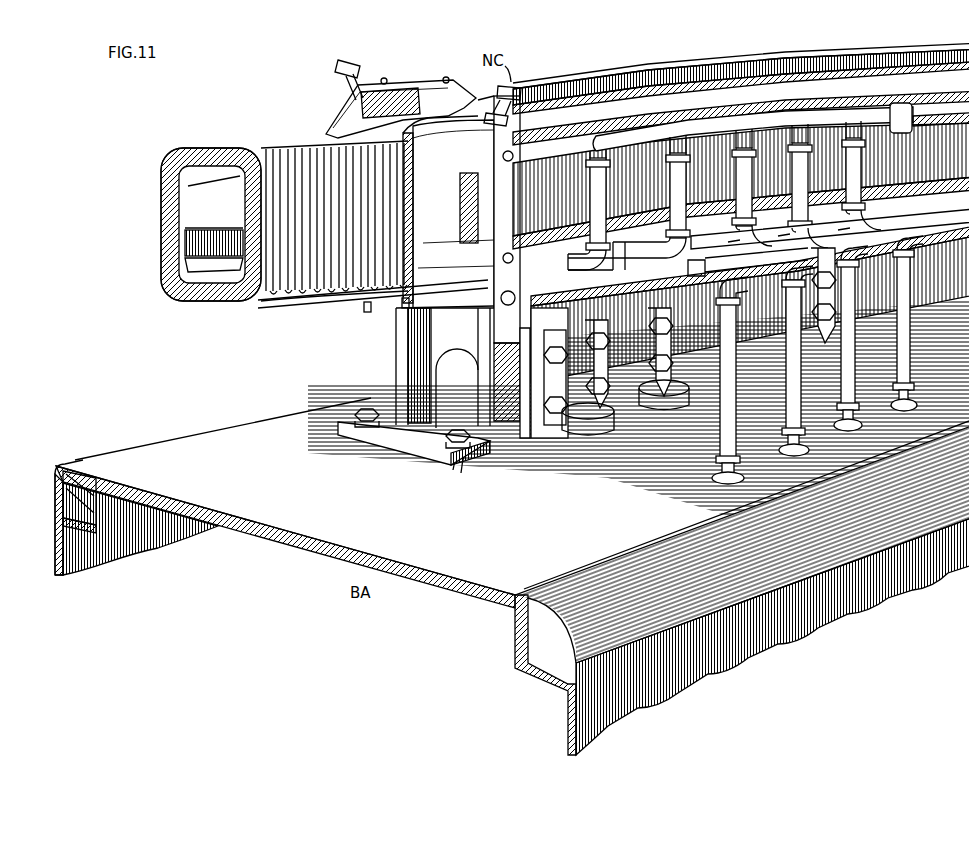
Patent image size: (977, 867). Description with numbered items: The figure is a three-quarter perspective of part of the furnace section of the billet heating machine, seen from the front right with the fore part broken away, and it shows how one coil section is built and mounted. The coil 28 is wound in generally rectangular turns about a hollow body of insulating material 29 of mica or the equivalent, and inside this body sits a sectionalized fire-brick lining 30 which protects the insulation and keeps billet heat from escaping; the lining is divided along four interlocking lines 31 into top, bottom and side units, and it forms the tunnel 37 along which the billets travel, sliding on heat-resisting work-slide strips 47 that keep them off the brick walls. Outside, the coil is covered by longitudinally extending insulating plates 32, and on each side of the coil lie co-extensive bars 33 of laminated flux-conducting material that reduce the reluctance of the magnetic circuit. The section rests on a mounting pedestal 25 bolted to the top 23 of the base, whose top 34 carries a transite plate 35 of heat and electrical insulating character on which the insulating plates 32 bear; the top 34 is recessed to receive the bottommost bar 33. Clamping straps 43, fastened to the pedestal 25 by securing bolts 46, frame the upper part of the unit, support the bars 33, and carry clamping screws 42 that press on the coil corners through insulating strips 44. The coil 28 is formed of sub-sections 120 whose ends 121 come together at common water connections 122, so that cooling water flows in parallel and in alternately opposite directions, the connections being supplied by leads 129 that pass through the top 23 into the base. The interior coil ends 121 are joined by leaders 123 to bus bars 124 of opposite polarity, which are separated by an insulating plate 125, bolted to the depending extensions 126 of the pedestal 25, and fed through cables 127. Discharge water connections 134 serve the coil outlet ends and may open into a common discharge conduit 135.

The top of the base 23 is at (430, 585).
The mounting pedestal 25 is at (392, 425).
The coil 28 is at (170, 142).
The hollow body of insulating material 29 is at (220, 150).
The sectionalized fire-brick lining 30 is at (180, 212).
The interlocking division lines 31 is at (185, 176).
The longitudinally extending insulating plates 32 is at (388, 105).
The laminated flux-conducting bar 33 is at (372, 84).
The pedestal top 34 is at (438, 312).
The transite plate 35 is at (466, 305).
The tunnel 37 is at (176, 224).
The clamping screw 42 is at (325, 70).
The clamping strap 43 is at (330, 102).
The insulating strip 44 is at (456, 190).
The securing bolt 46 is at (503, 292).
The work-slide strip 47 is at (172, 258).
The coil sub-section 120 is at (365, 293).
The coil end 121 is at (360, 303).
The common water connection 122 is at (640, 258).
The leader 123 is at (572, 268).
The bus bar 124 is at (510, 445).
The insulating plate 125 is at (506, 430).
The depending extension of pedestal 126 is at (440, 435).
The cable 127 is at (548, 430).
The water lead 129 is at (768, 422).
The discharge water connection 134 is at (650, 175).
The common discharge conduit 135 is at (928, 108).